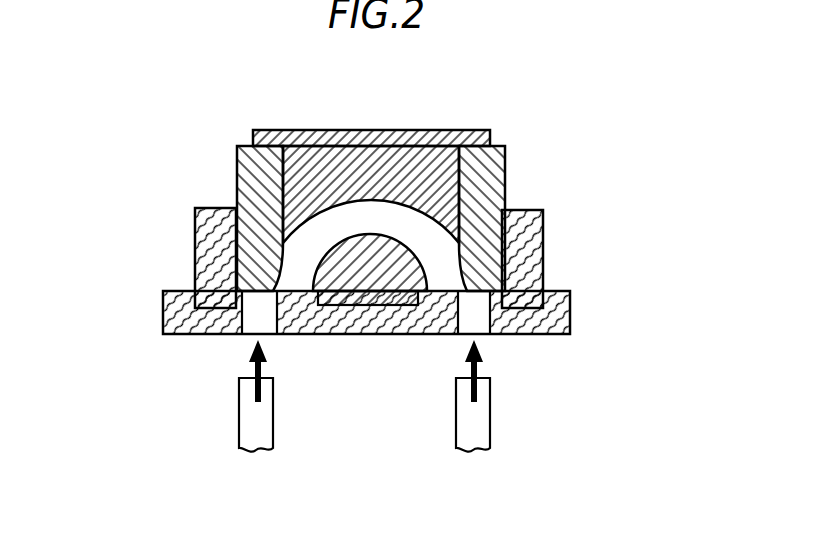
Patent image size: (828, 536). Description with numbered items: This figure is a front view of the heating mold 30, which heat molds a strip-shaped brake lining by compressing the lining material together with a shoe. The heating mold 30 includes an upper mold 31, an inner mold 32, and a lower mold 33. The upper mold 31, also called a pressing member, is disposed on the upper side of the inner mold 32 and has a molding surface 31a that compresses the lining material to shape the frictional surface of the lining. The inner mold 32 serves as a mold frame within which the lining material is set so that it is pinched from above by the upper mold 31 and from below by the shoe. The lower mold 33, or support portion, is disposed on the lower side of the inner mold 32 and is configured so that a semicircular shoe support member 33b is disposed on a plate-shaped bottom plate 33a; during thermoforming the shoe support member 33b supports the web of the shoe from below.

The heating mold 30 is at (366, 250).
The upper mold 31 is at (426, 285).
The molding surface 31a is at (443, 232).
The inner mold 32 is at (505, 180).
The lower mold 33 is at (366, 292).
The bottom plate 33a is at (163, 318).
The shoe support member 33b is at (305, 272).